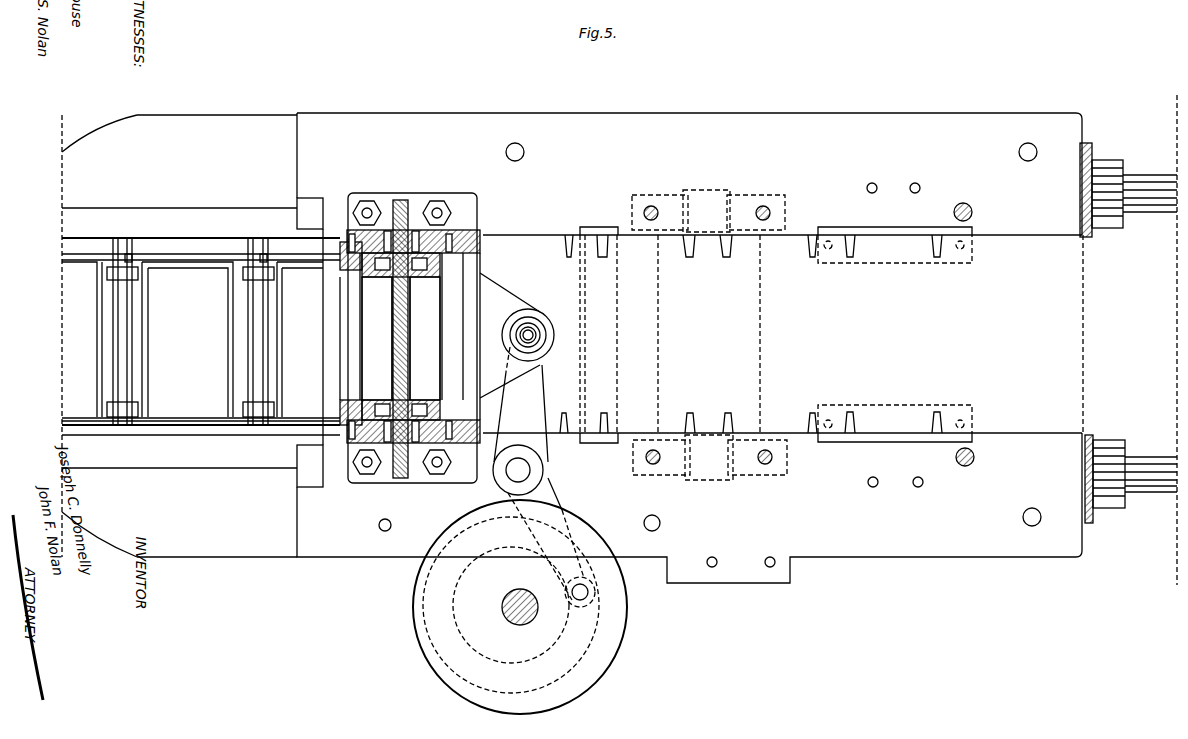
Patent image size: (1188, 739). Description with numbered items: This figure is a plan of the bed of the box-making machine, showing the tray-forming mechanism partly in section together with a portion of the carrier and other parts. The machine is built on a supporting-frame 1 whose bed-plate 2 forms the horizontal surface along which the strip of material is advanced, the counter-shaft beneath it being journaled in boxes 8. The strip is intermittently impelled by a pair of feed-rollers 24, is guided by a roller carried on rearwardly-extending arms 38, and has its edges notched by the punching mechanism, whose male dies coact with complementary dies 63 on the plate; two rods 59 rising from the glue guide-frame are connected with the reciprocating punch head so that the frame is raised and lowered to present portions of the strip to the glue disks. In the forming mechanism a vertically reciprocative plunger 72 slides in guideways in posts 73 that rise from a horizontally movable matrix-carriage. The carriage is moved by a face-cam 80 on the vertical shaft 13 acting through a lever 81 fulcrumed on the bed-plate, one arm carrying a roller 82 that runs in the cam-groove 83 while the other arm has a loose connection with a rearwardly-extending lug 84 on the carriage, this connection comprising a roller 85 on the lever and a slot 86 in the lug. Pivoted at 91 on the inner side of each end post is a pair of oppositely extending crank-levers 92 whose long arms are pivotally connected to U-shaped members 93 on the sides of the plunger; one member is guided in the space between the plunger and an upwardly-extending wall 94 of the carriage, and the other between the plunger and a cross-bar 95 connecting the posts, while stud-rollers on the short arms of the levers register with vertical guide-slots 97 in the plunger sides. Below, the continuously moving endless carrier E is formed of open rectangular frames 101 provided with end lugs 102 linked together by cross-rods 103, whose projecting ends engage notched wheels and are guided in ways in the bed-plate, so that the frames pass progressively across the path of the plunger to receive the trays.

The supporting-frame 1 is at (715, 113).
The bed-plate 2 is at (847, 128).
The endless carrier E is at (100, 340).
The boxes 8 is at (437, 199).
The vertical shaft 13 is at (502, 607).
The feed-rollers 24 is at (761, 333).
The rearwardly-extending arms 38 is at (1145, 185).
The rods 59 is at (974, 212).
The complementary dies 63 is at (850, 240).
The plunger 72 is at (599, 228).
The posts 73 is at (404, 200).
The face-cam 80 is at (433, 657).
The lever 81 is at (550, 493).
The roller 82 is at (590, 603).
The cam-groove 83 is at (573, 663).
The rearwardly-extending lug 84 is at (508, 295).
The roller 85 is at (538, 342).
The slot 86 is at (534, 318).
The pivot 91 is at (414, 234).
The crank-levers 92 is at (371, 246).
The U-shaped members 93 is at (353, 322).
The upwardly-extending wall 94 is at (333, 335).
The cross-bar 95 is at (473, 346).
The vertical guide-slots 97 is at (419, 270).
The open rectangular frames 101 is at (197, 422).
The end lugs 102 is at (247, 410).
The cross-rods 103 is at (252, 315).